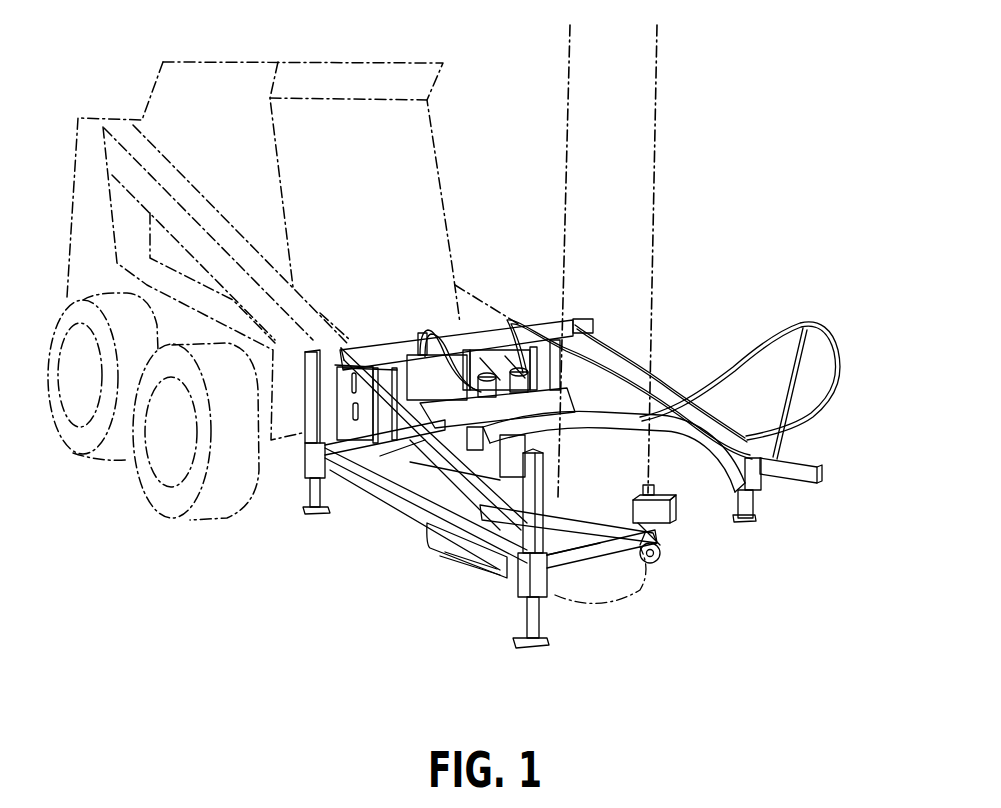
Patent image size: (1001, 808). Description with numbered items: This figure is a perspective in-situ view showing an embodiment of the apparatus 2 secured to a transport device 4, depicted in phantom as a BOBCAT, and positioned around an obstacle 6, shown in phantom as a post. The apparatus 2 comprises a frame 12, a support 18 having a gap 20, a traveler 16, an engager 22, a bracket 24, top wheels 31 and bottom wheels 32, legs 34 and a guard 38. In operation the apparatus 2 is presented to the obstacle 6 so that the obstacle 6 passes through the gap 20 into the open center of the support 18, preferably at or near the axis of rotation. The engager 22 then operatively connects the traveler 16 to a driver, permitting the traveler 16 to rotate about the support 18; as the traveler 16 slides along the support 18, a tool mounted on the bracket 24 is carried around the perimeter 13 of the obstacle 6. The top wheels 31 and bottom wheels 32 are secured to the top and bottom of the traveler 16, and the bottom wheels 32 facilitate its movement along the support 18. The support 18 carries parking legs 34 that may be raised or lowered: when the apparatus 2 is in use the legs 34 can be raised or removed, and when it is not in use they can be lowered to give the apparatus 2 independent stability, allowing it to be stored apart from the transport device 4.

The apparatus 2 is at (356, 529).
The transport device 4 is at (208, 58).
The obstacle 6 is at (657, 107).
The frame 12 is at (307, 395).
The perimeter 13 is at (657, 482).
The traveler 16 is at (593, 525).
The support 18 is at (750, 520).
The gap 20 is at (690, 503).
The engager 22 is at (433, 460).
The bracket 24 is at (582, 477).
The top wheels 31 is at (790, 482).
The bottom wheels 32 is at (662, 557).
The legs 34 is at (520, 623).
The guard 38 is at (453, 555).